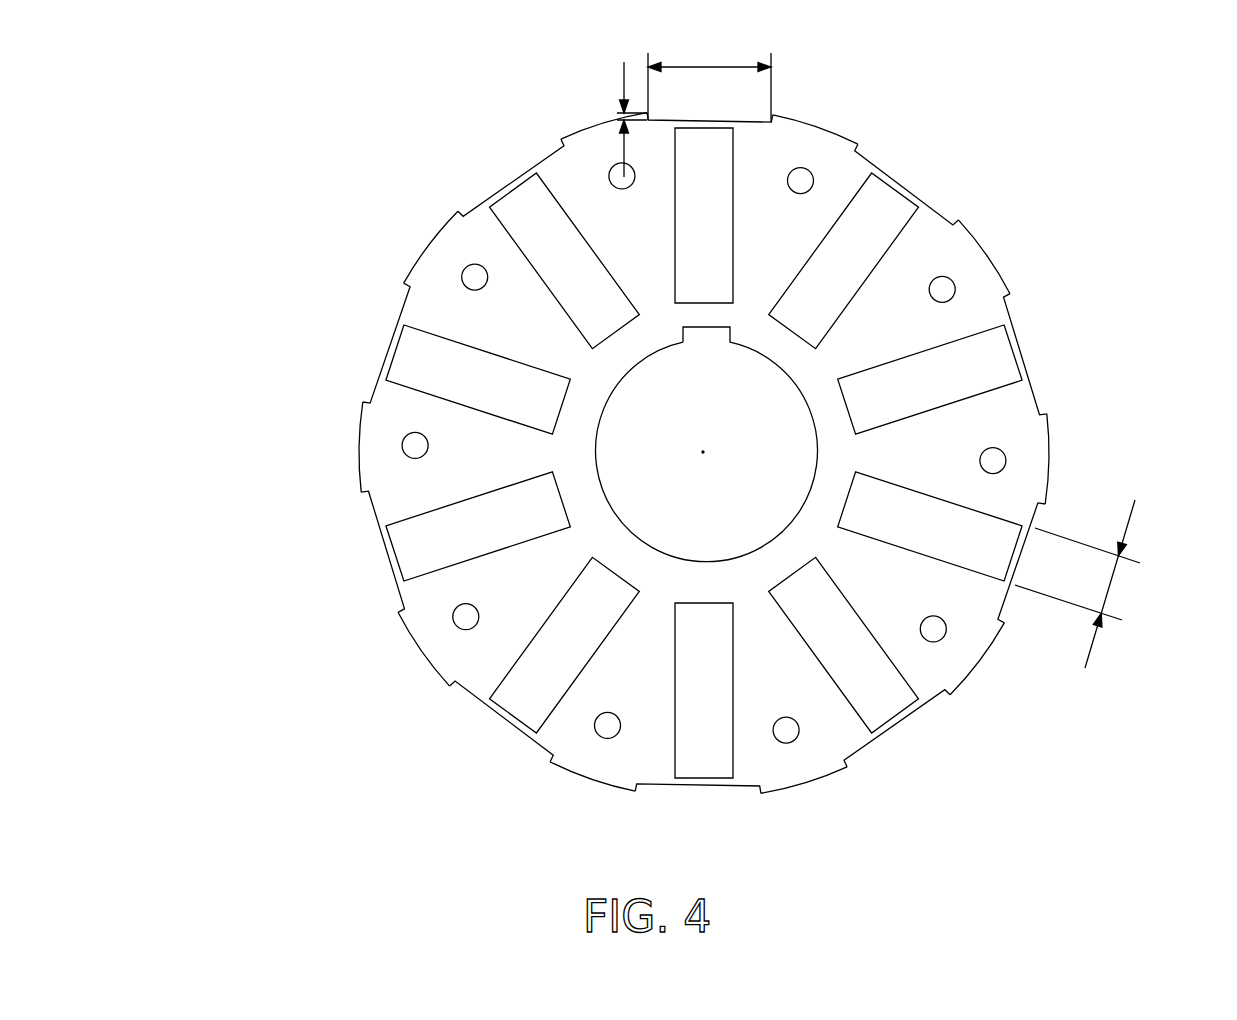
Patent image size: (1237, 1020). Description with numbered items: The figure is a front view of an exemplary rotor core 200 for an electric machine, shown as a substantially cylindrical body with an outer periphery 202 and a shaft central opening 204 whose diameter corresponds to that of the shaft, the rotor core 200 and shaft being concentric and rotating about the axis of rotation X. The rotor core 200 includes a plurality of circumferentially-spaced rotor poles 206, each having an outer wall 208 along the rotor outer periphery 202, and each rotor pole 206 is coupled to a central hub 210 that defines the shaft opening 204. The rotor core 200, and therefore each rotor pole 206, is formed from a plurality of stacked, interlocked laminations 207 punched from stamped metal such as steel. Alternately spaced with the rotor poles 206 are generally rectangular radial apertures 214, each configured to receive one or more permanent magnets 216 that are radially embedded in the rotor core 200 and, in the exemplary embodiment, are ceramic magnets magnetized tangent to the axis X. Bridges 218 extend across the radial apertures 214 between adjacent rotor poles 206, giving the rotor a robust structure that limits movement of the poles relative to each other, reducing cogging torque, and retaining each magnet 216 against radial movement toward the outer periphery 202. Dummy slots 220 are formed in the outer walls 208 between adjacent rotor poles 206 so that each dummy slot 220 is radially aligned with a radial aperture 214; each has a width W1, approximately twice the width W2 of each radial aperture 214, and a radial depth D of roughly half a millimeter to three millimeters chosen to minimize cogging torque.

The rotor core 200 is at (290, 150).
The outer periphery 202 is at (436, 231).
The shaft central opening 204 is at (630, 507).
The rotor poles 206 is at (932, 433).
The laminations 207 is at (362, 421).
The outer wall 208 is at (577, 131).
The central hub 210 is at (577, 490).
The radial apertures 214 is at (980, 588).
The permanent magnets 216 is at (722, 182).
The bridges 218 is at (508, 188).
The dummy slots 220 is at (480, 178).
The axis of rotation X is at (702, 452).
The radial depth D is at (618, 116).
The width of dummy slot W1 is at (705, 65).
The width of radial aperture W2 is at (1110, 587).